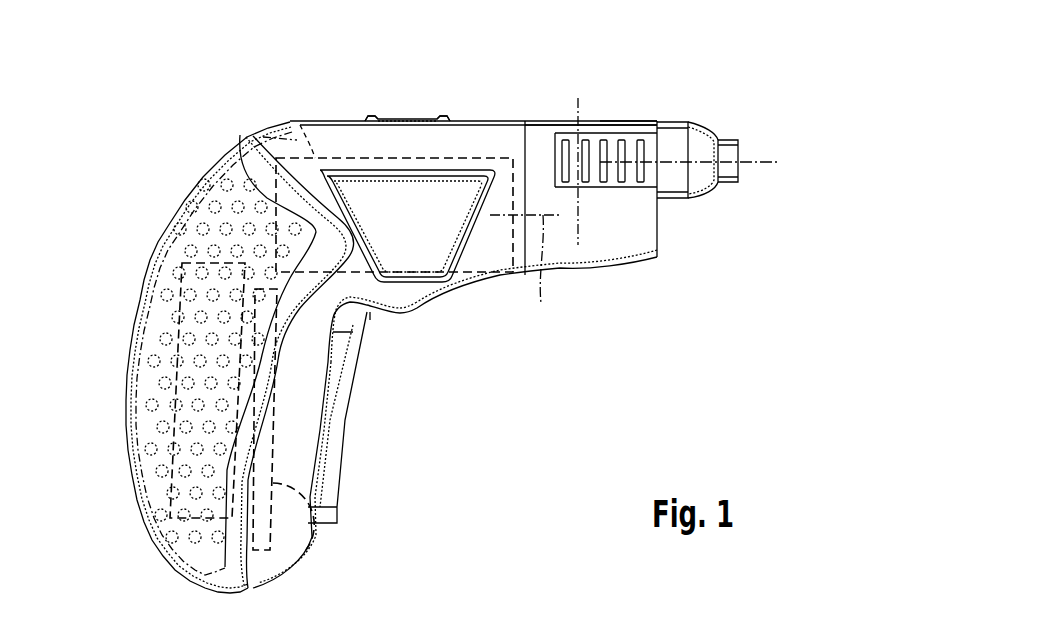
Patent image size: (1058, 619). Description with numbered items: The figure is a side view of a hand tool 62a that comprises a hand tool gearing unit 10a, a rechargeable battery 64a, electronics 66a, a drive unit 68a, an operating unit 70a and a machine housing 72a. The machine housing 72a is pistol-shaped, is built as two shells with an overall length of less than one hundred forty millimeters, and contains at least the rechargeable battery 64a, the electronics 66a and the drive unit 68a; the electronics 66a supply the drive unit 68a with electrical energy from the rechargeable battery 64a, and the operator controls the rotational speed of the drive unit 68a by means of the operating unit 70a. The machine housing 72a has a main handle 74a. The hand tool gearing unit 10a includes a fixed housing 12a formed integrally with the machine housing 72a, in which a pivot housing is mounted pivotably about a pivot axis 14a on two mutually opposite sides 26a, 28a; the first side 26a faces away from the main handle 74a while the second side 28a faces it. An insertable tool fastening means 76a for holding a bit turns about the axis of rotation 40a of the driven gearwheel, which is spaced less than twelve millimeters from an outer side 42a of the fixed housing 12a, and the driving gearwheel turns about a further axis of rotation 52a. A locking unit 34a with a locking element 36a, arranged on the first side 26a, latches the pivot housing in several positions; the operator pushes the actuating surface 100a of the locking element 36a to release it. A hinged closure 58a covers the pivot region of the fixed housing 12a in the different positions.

The hand tool gearing unit 10a is at (708, 92).
The fixed housing 12a is at (640, 122).
The pivot axis 14a is at (581, 135).
The first side 26a is at (648, 75).
The second side 28a is at (593, 303).
The locking unit 34a is at (404, 100).
The locking element 36a is at (430, 118).
The axis of rotation of the driven gearwheel 40a is at (762, 160).
The outer side of the fixed housing 42a is at (643, 121).
The axis of rotation of the driving gearwheel 52a is at (527, 276).
The hinged closure 58a is at (554, 140).
The hand tool 62a is at (170, 153).
The rechargeable battery 64a is at (183, 298).
The electronics 66a is at (307, 543).
The drive unit 68a is at (283, 120).
The operating unit 70a is at (352, 416).
The machine housing 72a is at (497, 133).
The main handle 74a is at (137, 487).
The insertable tool fastening means 76a is at (733, 175).
The actuating surface 100a is at (400, 118).